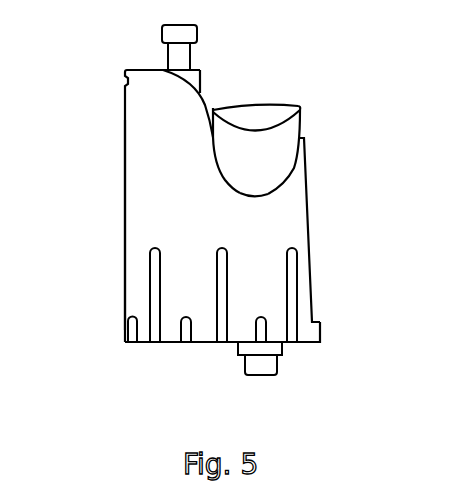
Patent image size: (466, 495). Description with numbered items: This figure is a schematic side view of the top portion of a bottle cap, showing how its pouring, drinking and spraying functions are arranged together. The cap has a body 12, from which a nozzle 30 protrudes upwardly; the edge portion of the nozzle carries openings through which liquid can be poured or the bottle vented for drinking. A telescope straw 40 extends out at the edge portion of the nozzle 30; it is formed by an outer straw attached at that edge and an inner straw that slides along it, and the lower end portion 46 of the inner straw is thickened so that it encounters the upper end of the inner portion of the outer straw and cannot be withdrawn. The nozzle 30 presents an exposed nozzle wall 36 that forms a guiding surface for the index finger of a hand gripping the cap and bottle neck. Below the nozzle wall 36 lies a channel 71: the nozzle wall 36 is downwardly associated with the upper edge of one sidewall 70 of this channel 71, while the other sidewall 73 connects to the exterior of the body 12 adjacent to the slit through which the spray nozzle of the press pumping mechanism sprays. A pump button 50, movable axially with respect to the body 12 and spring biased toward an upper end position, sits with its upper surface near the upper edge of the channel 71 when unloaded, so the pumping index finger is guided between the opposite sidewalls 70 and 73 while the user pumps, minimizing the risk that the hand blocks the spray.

The body 12 is at (117, 195).
The nozzle 30 is at (120, 117).
The telescope straw 40 is at (192, 52).
The nozzle wall 36 is at (208, 108).
The pump button 50 is at (302, 115).
The sidewall 70 is at (215, 162).
The channel 71 is at (233, 195).
The sidewall 73 is at (297, 172).
The lower end portion 46 is at (465, 325).